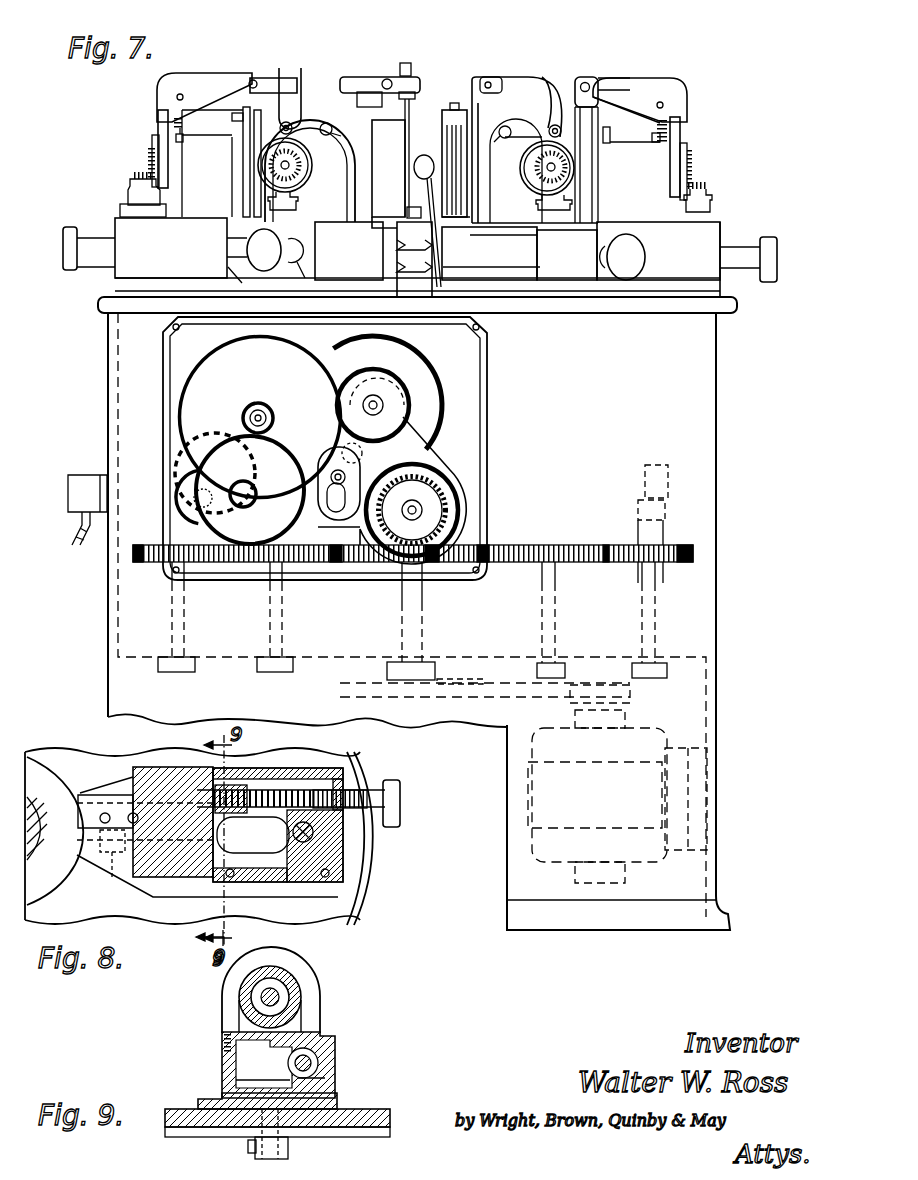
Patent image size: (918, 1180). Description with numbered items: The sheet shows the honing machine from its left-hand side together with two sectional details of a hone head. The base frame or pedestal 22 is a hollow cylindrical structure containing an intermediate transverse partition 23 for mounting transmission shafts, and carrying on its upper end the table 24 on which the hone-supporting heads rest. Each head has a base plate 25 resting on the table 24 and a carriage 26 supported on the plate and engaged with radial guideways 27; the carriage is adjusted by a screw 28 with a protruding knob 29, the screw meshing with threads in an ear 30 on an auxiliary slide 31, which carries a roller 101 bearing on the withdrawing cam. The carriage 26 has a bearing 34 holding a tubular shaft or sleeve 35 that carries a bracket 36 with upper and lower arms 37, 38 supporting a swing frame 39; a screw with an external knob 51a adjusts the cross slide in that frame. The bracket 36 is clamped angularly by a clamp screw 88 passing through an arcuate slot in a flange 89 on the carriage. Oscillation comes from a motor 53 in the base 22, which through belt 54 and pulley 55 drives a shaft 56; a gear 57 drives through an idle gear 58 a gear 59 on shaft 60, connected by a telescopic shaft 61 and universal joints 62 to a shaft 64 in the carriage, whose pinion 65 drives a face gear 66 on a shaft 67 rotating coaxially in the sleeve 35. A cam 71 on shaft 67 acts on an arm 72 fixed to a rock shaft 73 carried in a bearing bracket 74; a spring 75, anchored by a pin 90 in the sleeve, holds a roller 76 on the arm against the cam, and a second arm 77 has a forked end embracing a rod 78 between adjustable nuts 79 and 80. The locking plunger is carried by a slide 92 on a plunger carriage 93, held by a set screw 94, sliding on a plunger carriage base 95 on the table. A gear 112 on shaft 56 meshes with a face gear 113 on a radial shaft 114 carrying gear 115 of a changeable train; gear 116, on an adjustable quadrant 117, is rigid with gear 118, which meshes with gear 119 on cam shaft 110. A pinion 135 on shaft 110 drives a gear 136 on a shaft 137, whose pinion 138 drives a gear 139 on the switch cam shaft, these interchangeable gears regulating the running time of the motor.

In FIG. 7, the base frame or pedestal 22 is at (690, 438).
In FIG. 8, the base frame or pedestal 22 is at (363, 858).
In FIG. 7, the intermediate transverse partition 23 is at (252, 655).
In FIG. 8, the table 24 is at (48, 773).
In FIG. 9, the table 24 is at (391, 1121).
In FIG. 7, the base plate 25 is at (240, 290).
In FIG. 8, the base plate 25 is at (153, 893).
In FIG. 9, the base plate 25 is at (338, 1101).
In FIG. 7, the carriage 26 is at (112, 262).
In FIG. 8, the carriage 26 is at (163, 777).
In FIG. 9, the carriage 26 is at (335, 1036).
In FIG. 7, the radial guideways 27 is at (306, 275).
In FIG. 9, the radial guideways 27 is at (226, 1083).
In FIG. 8, the screw 28 is at (281, 790).
In FIG. 9, the screw 28 is at (317, 1068).
In FIG. 7, the knob 29 is at (70, 226).
In FIG. 8, the knob 29 is at (393, 780).
In FIG. 8, the ear 30 is at (240, 785).
In FIG. 9, the ear 30 is at (312, 1042).
In FIG. 8, the auxiliary slide 31 is at (120, 792).
In FIG. 9, the auxiliary slide 31 is at (280, 1070).
In FIG. 7, the bearing 34 is at (328, 124).
In FIG. 9, the bearing 34 is at (300, 984).
In FIG. 9, the tubular shaft or sleeve 35 is at (289, 997).
In FIG. 7, the bracket 36 is at (246, 120).
In FIG. 7, the upper arm 37 is at (456, 104).
In FIG. 7, the lower arm 38 is at (470, 233).
In FIG. 7, the swing frame 39 is at (405, 138).
In FIG. 7, the knob 51a is at (428, 181).
In FIG. 7, the motor 53 is at (535, 770).
In FIG. 7, the belt 54 is at (514, 682).
In FIG. 7, the pulley 55 is at (455, 681).
In FIG. 7, the shaft 56 is at (401, 604).
In FIG. 7, the gear 57 is at (340, 566).
In FIG. 7, the idle gear 58 is at (258, 548).
In FIG. 7, the gear 59 is at (172, 566).
In FIG. 7, the shaft 60 is at (171, 632).
In FIG. 7, the telescopic shaft 61 is at (645, 478).
In FIG. 7, the universal joint 62 is at (645, 509).
In FIG. 8, the shaft 64 is at (293, 834).
In FIG. 7, the pinion 65 is at (133, 178).
In FIG. 7, the face gear 66 is at (147, 159).
In FIG. 9, the shaft 67 is at (249, 1000).
In FIG. 7, the cam 71 is at (155, 142).
In FIG. 7, the arm 72 is at (187, 74).
In FIG. 7, the rock shaft 73 is at (251, 81).
In FIG. 7, the bearing bracket 74 is at (601, 101).
In FIG. 7, the spring 75 is at (180, 120).
In FIG. 7, the roller 76 is at (301, 120).
In FIG. 7, the second arm 77 is at (266, 77).
In FIG. 7, the rod 78 is at (411, 65).
In FIG. 7, the nut 79 is at (416, 77).
In FIG. 7, the nut 80 is at (416, 96).
In FIG. 7, the clamp screw 88 is at (232, 117).
In FIG. 7, the flange 89 is at (356, 166).
In FIG. 9, the flange 89 is at (296, 966).
In FIG. 7, the pin 90 is at (182, 143).
In FIG. 7, the slide 92 is at (398, 235).
In FIG. 7, the plunger carriage 93 is at (398, 255).
In FIG. 7, the set screw 94 is at (407, 212).
In FIG. 7, the plunger carriage base 95 is at (423, 290).
In FIG. 8, the roller 101 is at (110, 860).
In FIG. 9, the roller 101 is at (262, 1160).
In FIG. 7, the shaft 110 is at (270, 418).
In FIG. 7, the gear 112 is at (476, 526).
In FIG. 7, the face gear 113 is at (470, 508).
In FIG. 7, the radial shaft 114 is at (425, 508).
In FIG. 7, the gear 115 is at (443, 462).
In FIG. 7, the gear 116 is at (425, 393).
In FIG. 7, the quadrant 117 is at (433, 428).
In FIG. 7, the gear 118 is at (362, 380).
In FIG. 7, the gear 119 is at (220, 372).
In FIG. 7, the pinion 135 is at (263, 402).
In FIG. 7, the gear 136 is at (217, 440).
In FIG. 7, the shaft 137 is at (237, 512).
In FIG. 7, the pinion 138 is at (254, 500).
In FIG. 7, the gear 139 is at (244, 481).